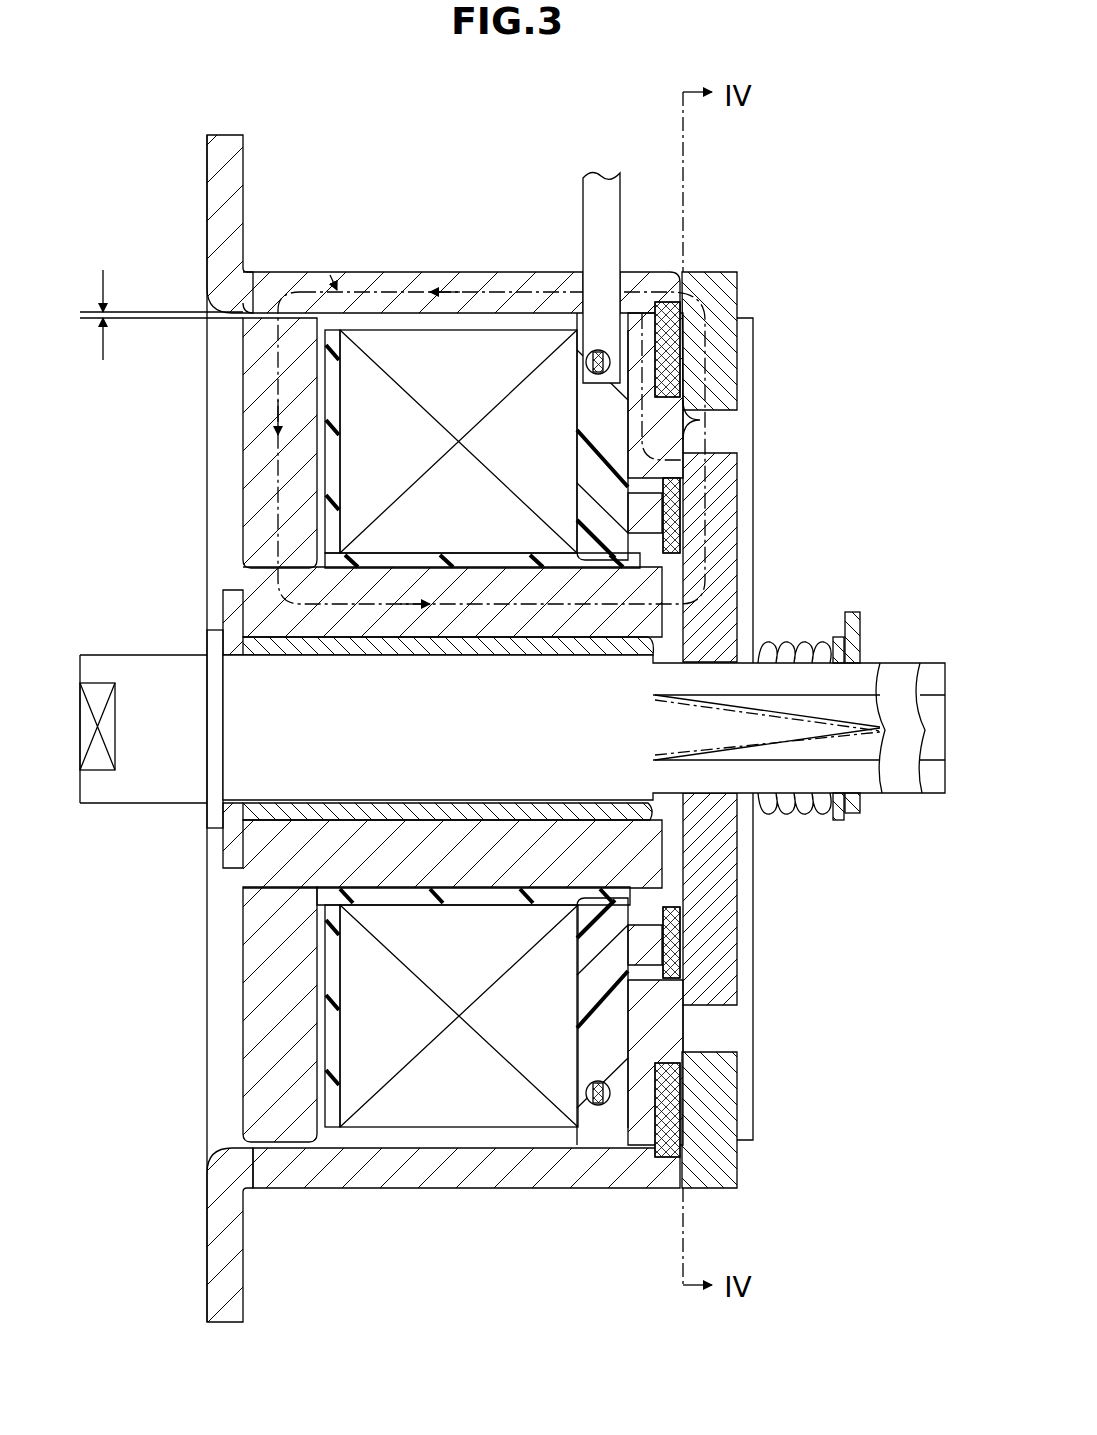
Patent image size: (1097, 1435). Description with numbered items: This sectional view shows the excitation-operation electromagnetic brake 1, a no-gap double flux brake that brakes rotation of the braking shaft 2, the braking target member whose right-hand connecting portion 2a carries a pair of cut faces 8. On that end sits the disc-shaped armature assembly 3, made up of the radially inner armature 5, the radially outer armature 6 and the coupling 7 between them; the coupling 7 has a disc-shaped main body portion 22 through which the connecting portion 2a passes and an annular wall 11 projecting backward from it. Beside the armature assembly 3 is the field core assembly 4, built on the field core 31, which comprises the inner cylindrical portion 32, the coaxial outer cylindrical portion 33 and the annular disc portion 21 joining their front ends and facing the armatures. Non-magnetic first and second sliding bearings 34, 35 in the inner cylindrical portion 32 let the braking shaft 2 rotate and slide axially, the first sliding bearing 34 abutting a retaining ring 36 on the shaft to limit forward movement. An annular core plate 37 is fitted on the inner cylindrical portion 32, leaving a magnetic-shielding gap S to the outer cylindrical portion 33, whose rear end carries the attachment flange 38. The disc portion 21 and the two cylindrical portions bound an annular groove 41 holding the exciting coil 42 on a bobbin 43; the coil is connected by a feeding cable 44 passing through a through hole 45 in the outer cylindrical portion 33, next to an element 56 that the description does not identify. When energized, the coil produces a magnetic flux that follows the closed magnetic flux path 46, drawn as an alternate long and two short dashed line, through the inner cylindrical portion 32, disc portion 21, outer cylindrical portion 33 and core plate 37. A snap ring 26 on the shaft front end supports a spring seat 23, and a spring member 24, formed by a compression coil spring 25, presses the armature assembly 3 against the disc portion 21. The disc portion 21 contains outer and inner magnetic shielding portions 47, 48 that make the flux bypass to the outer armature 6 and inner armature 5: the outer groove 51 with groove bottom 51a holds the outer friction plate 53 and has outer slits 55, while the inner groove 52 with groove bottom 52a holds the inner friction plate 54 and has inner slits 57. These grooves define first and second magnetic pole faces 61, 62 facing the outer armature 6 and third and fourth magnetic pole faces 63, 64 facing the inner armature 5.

The electromagnetic brake 1 is at (160, 128).
The braking shaft 2 is at (512, 714).
The connecting portion 2a is at (870, 800).
The armature assembly 3 is at (769, 717).
The field core assembly 4 is at (310, 262).
The inner armature 5 is at (753, 533).
The outer armature 6 is at (712, 272).
The coupling 7 is at (753, 408).
The cut faces 8 is at (790, 735).
The annular wall 11 is at (753, 383).
The disc portion 21 is at (668, 430).
The main body portion 22 is at (753, 488).
The spring seat 23 is at (843, 645).
The spring member 24 is at (793, 638).
The compression coil spring 25 is at (830, 640).
The snap ring 26 is at (860, 655).
The field core 31 is at (398, 728).
The inner cylindrical portion 32 is at (250, 582).
The outer cylindrical portion 33 is at (383, 272).
The first sliding bearing 34 is at (290, 812).
The second sliding bearing 35 is at (540, 815).
The retaining ring 36 is at (212, 826).
The core plate 37 is at (243, 512).
The attachment flange 38 is at (207, 186).
The annular groove 41 is at (384, 678).
The exciting coil 42 is at (410, 355).
The bobbin 43 is at (322, 485).
The feeding cable 44 is at (583, 185).
The through hole 45 is at (590, 285).
The closed magnetic flux path 46 is at (336, 285).
The outer magnetic shielding portion 47 is at (628, 1160).
The inner magnetic shielding portion 48 is at (630, 985).
The outer groove 51 is at (730, 1201).
The groove bottom 51a is at (665, 1160).
The inner groove 52 is at (757, 946).
The groove bottom 52a is at (672, 925).
The outer friction plate 53 is at (670, 1090).
The inner friction plate 54 is at (682, 937).
The outer slits 55 is at (663, 345).
The screw 56 is at (630, 390).
The inner slits 57 is at (668, 520).
The first magnetic pole face 61 is at (737, 1165).
The second magnetic pole face 62 is at (737, 1060).
The third magnetic pole face 63 is at (737, 995).
The fourth magnetic pole face 64 is at (682, 902).
The gap S is at (161, 340).